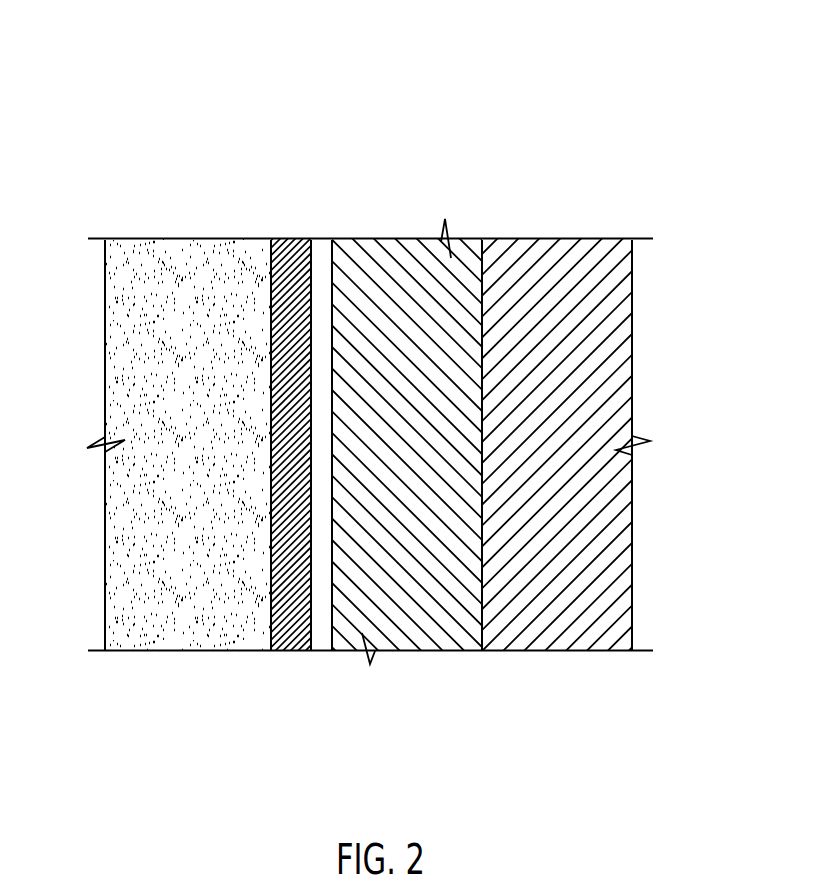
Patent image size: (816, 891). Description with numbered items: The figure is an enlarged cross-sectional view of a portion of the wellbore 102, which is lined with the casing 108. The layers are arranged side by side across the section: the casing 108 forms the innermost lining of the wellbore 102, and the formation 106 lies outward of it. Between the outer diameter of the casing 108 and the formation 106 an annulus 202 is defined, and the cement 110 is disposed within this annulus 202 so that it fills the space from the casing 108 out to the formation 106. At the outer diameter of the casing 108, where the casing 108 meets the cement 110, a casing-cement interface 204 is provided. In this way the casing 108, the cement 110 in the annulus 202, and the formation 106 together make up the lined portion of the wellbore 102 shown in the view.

The wellbore 102 is at (663, 49).
The formation 106 is at (573, 355).
The casing 108 is at (281, 651).
The cement 110 is at (427, 355).
The annulus 202 is at (482, 193).
The casing-cement interface 204 is at (318, 651).